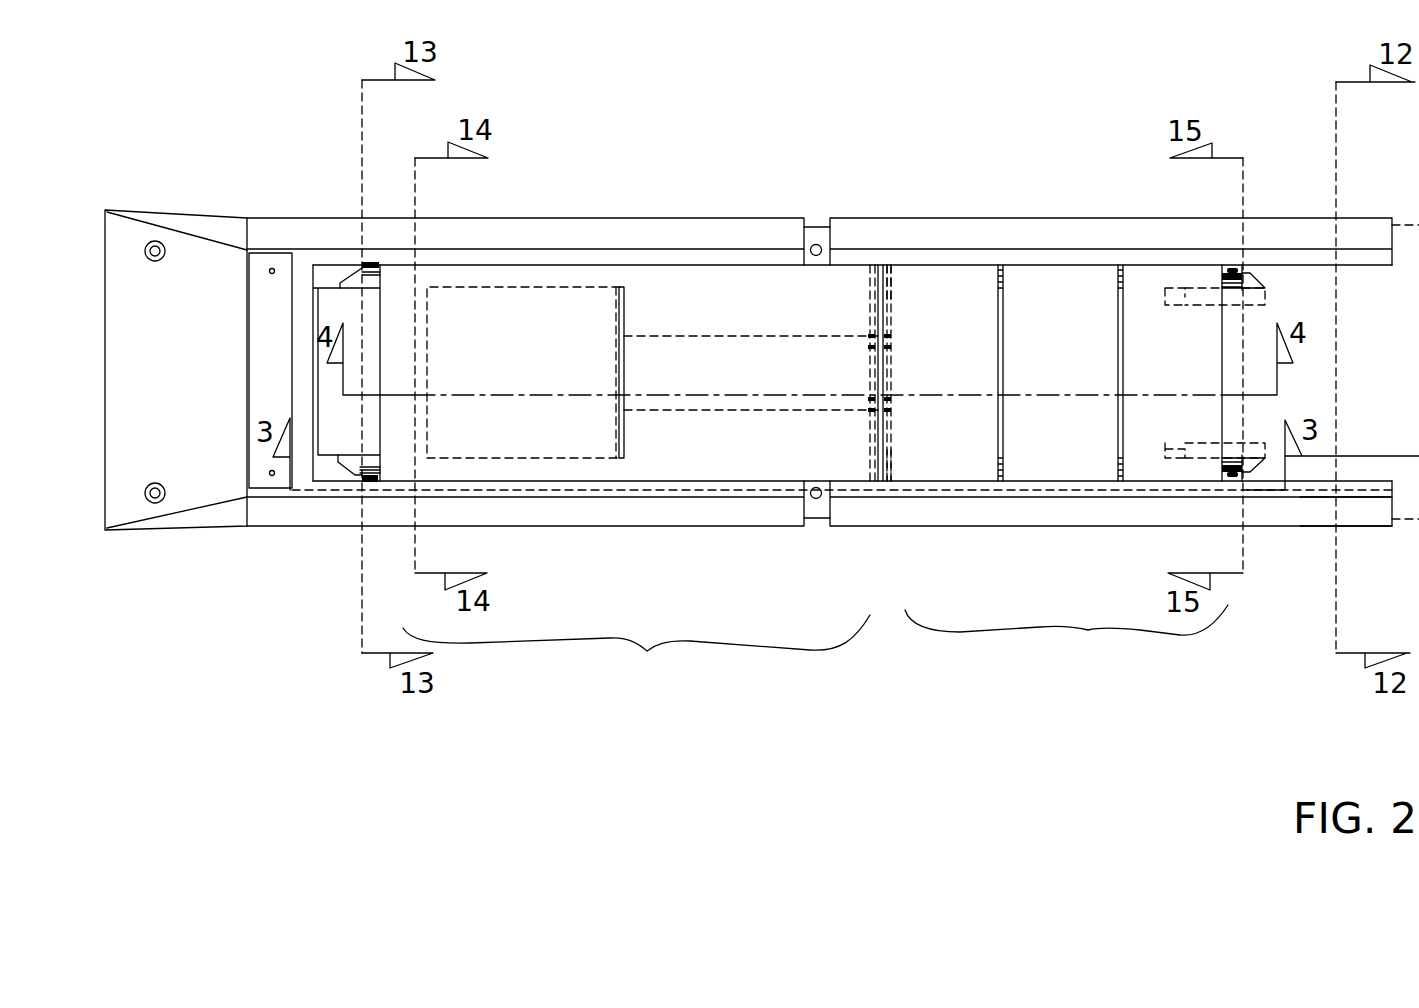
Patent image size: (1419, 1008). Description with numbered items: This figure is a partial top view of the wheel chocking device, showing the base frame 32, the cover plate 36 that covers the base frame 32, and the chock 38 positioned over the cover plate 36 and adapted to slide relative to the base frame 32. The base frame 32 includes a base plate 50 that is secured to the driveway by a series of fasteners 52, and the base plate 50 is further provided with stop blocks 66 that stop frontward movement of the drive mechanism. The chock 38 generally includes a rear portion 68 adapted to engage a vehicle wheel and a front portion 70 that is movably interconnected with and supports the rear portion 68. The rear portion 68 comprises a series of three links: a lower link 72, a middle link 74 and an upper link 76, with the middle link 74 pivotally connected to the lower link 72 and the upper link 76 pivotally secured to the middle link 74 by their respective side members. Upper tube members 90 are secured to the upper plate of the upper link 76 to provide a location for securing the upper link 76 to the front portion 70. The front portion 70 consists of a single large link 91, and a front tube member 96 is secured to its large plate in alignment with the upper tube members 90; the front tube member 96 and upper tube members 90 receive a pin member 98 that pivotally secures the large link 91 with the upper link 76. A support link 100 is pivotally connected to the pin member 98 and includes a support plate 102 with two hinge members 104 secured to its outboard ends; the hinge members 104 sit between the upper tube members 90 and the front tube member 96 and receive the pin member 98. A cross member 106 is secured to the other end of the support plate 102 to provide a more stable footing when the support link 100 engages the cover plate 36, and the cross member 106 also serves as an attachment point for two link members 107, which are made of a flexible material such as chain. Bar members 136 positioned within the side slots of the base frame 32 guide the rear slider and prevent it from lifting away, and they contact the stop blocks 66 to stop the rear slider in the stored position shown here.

The base frame 32 is at (1298, 531).
The cover plate 36 is at (1287, 300).
The chock 38 is at (755, 465).
The base plate 50 is at (825, 230).
The fasteners 52 is at (814, 244).
The stop blocks 66 is at (1167, 290).
The rear portion 68 is at (1066, 635).
The front portion 70 is at (636, 646).
The lower link 72 is at (1182, 277).
The middle link 74 is at (1040, 282).
The upper link 76 is at (935, 278).
The upper tube members 90 is at (890, 295).
The large link 91 is at (562, 278).
The front tube member 96 is at (892, 368).
The pin member 98 is at (887, 263).
The support link 100 is at (720, 337).
The support plate 102 is at (672, 350).
The hinge members 104 is at (893, 338).
The cross member 106 is at (617, 307).
The link members 107 is at (459, 288).
The bar members 136 is at (1210, 305).